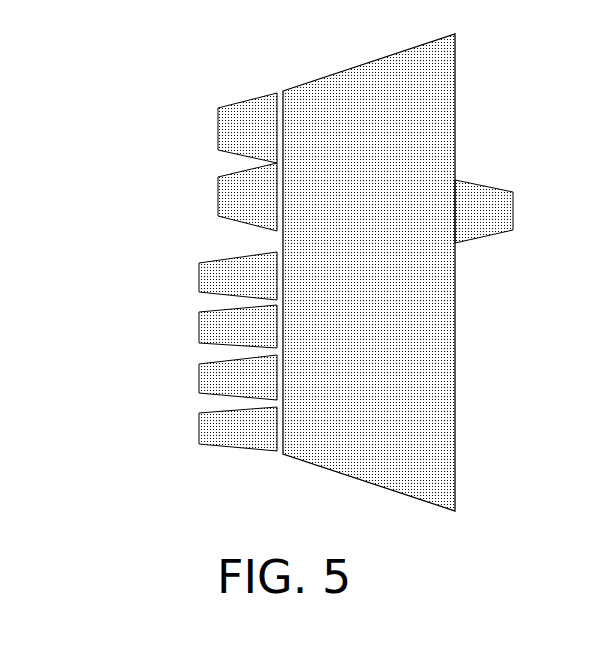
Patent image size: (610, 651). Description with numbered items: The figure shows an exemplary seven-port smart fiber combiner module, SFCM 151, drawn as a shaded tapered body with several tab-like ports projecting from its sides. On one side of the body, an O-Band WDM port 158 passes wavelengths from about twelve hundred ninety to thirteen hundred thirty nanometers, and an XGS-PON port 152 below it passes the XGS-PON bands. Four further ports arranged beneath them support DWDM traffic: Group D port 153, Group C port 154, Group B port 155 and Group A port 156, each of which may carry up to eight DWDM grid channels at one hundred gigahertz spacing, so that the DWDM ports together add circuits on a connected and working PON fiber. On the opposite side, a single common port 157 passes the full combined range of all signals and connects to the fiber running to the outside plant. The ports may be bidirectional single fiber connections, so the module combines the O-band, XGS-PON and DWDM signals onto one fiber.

The SFCM 151 is at (404, 52).
The XGS-PON port 152 is at (220, 205).
The Group D DWDM port 153 is at (198, 267).
The Group C DWDM port 154 is at (198, 328).
The Group B DWDM port 155 is at (198, 387).
The Group A DWDM port 156 is at (198, 443).
The common port 157 is at (462, 180).
The O-Band WDM port 158 is at (217, 108).